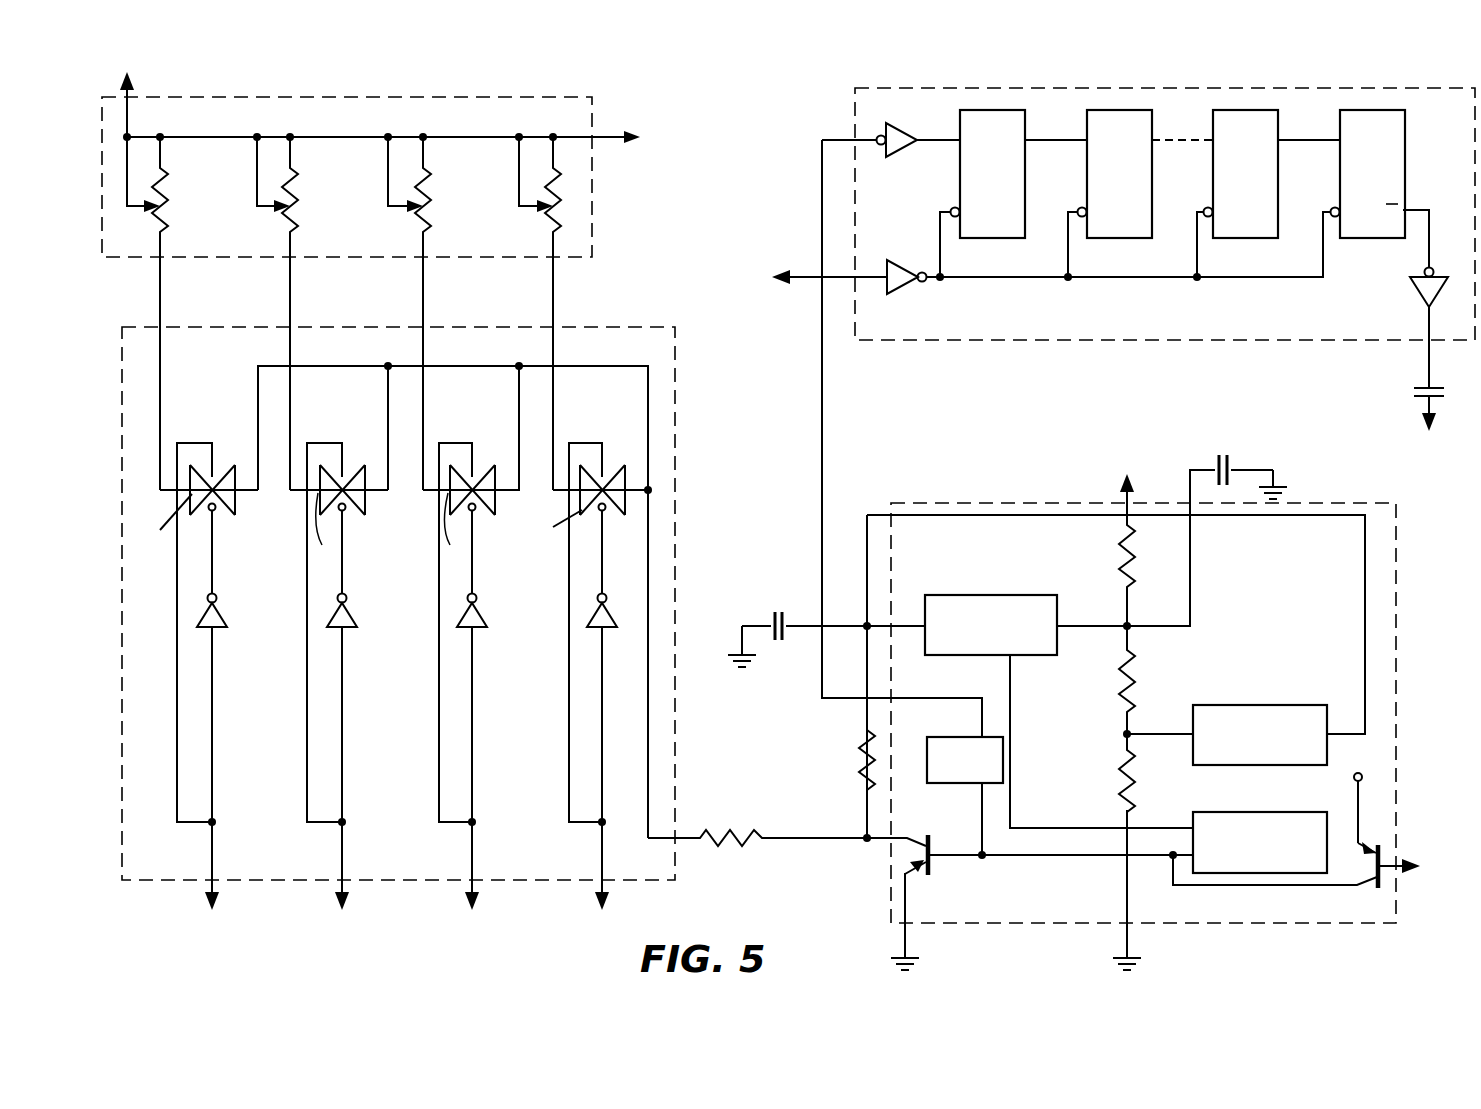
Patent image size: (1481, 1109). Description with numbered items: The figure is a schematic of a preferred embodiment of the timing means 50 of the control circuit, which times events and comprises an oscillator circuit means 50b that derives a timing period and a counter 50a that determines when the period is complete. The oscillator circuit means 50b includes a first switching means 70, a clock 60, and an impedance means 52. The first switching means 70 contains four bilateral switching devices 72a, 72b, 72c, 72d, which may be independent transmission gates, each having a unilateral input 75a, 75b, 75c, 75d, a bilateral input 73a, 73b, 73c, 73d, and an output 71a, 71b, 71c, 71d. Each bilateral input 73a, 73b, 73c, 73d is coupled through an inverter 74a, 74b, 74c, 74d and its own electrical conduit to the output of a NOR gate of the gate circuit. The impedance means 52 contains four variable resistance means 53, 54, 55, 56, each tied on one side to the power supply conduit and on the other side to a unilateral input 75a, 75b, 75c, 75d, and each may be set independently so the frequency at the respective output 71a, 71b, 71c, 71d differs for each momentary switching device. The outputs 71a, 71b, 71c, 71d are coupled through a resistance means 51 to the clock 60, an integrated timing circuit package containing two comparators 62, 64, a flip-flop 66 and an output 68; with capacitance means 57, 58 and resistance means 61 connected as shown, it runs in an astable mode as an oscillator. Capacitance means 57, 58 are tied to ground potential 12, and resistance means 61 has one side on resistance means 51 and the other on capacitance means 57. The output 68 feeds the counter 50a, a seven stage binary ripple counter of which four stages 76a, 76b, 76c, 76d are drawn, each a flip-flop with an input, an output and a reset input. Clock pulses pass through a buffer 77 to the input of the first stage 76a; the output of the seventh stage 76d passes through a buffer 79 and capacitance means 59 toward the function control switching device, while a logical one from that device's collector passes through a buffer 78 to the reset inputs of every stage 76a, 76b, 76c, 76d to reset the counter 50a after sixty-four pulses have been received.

The ground potential 12 is at (738, 652).
The timing means 50 is at (795, 79).
The counter 50a is at (1232, 80).
The oscillator circuit means 50b is at (723, 168).
The resistance means 51 is at (716, 831).
The impedance means 52 is at (596, 96).
The variable resistance means 53 is at (163, 210).
The variable resistance means 54 is at (293, 210).
The variable resistance means 55 is at (426, 210).
The variable resistance means 56 is at (556, 190).
The capacitance means 57 is at (784, 614).
The capacitance means 58 is at (1232, 468).
The capacitance means 59 is at (1434, 392).
The clock 60 is at (1398, 625).
The resistance means 61 is at (856, 772).
The comparator 62 is at (998, 595).
The comparator 64 is at (1274, 704).
The flip-flop 66 is at (1264, 812).
The output 68 is at (960, 786).
The first switching means 70 is at (655, 883).
The output 71a is at (237, 496).
The output 71b is at (367, 496).
The output 71c is at (497, 494).
The output 71d is at (627, 493).
The bilateral switching device 72a is at (218, 511).
The bilateral switching device 72b is at (353, 511).
The bilateral switching device 72c is at (480, 511).
The bilateral switching device 72d is at (608, 514).
The bilateral input 73a is at (212, 476).
The bilateral input 73b is at (342, 476).
The bilateral input 73c is at (474, 476).
The bilateral input 73d is at (602, 476).
The inverter 74a is at (218, 628).
The inverter 74b is at (352, 628).
The inverter 74c is at (485, 628).
The inverter 74d is at (602, 628).
The unilateral input 75a is at (160, 524).
The unilateral input 75b is at (328, 530).
The unilateral input 75c is at (455, 530).
The unilateral input 75d is at (556, 523).
The stage 76a is at (1022, 122).
The stage 76b is at (1158, 122).
The stage 76c is at (1283, 122).
The stage 76d is at (1408, 122).
The buffer 77 is at (896, 148).
The buffer 78 is at (896, 284).
The buffer 79 is at (1418, 294).